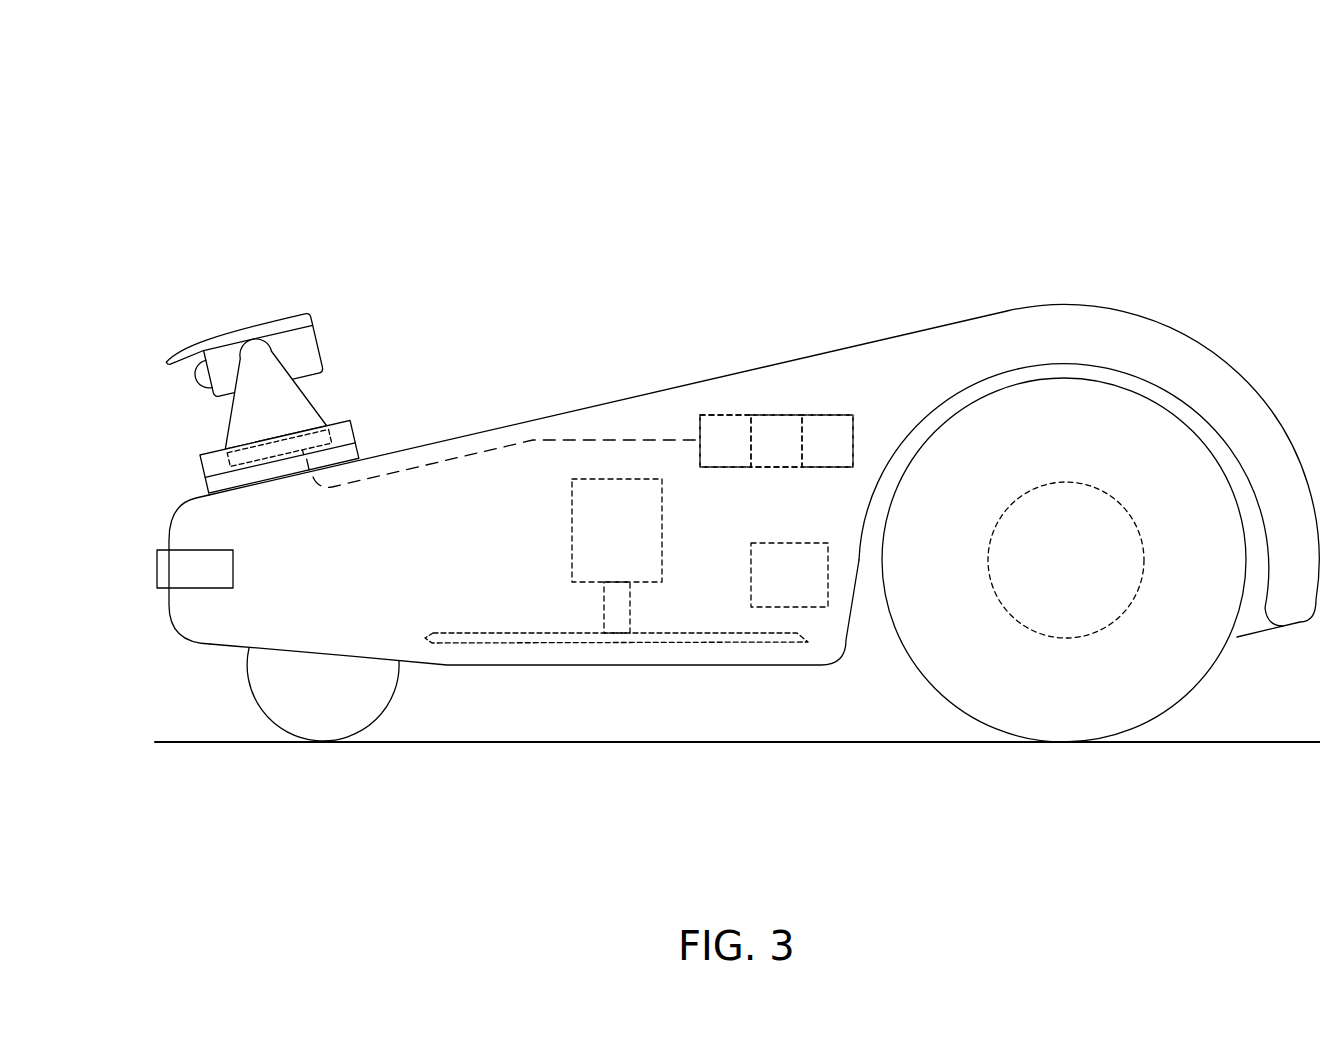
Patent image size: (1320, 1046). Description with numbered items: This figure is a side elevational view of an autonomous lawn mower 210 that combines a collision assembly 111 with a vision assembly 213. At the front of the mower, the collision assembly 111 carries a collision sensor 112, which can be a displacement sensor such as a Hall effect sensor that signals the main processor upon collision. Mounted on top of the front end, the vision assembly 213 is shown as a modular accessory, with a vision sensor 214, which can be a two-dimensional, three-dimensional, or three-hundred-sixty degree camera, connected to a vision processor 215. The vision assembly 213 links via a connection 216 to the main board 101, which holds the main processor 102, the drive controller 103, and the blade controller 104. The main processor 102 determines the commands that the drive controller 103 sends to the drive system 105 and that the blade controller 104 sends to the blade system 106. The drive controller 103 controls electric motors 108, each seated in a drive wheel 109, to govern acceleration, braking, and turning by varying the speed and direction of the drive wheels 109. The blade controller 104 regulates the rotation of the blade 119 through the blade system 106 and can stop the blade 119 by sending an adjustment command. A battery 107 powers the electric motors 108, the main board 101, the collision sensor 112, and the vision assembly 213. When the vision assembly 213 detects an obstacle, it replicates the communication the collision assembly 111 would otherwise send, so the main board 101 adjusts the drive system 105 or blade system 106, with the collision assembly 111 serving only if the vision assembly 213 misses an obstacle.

The autonomous lawn mower 210 is at (205, 118).
The vision assembly 213 is at (231, 292).
The vision sensor 214 is at (194, 377).
The vision processor 215 is at (352, 432).
The connection 216 is at (600, 440).
The main board 101 is at (812, 406).
The main processor 102 is at (725, 468).
The drive controller 103 is at (777, 468).
The blade controller 104 is at (827, 468).
The drive system 105 is at (1243, 662).
The blade system 106 is at (532, 513).
The battery 107 is at (752, 575).
The electric motors 108 is at (1069, 488).
The drive wheels 109 is at (1216, 581).
The collision assembly 111 is at (132, 560).
The collision sensor 112 is at (216, 581).
The blade 119 is at (475, 632).